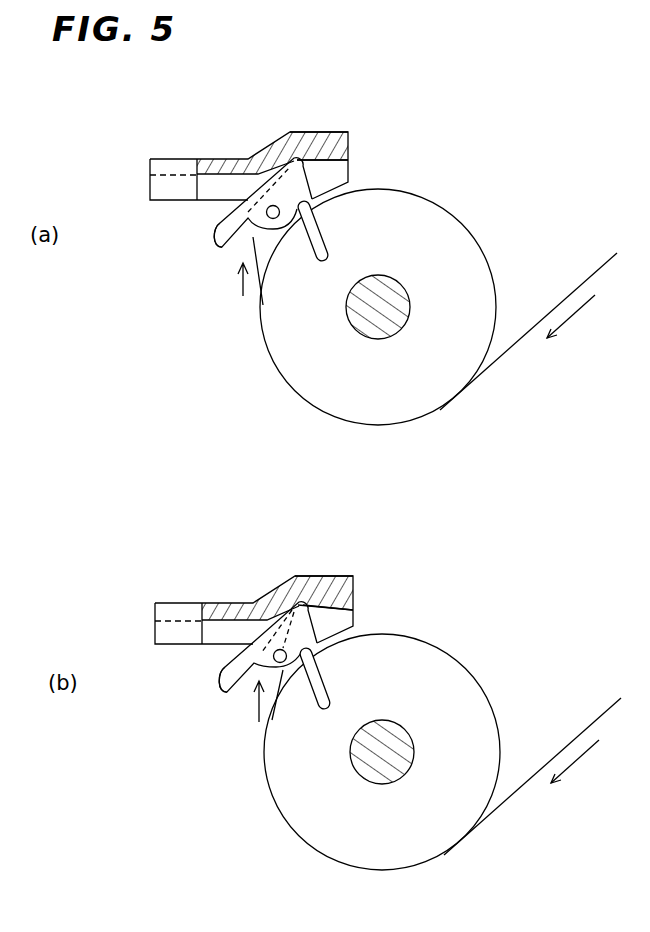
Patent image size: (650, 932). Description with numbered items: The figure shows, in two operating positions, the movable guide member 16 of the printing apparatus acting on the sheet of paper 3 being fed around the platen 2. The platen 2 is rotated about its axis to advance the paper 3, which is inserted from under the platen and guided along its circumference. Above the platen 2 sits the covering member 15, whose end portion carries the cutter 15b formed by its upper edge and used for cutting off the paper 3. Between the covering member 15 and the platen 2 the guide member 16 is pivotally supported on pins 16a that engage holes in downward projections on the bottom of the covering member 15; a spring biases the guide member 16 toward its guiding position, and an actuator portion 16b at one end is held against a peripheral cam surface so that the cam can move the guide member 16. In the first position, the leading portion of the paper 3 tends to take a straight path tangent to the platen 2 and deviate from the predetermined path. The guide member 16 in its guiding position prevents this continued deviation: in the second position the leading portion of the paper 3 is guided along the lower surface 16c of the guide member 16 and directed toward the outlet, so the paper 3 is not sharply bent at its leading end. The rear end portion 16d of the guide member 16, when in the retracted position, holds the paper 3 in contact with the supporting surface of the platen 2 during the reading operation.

The platen 2 is at (465, 237).
The sheet of paper 3 is at (560, 305).
The covering member 15 is at (238, 158).
The cutter 15b is at (330, 132).
The movable guide member 16 is at (220, 217).
The pin 16a is at (275, 219).
The actuator portion 16b is at (323, 245).
The lower surface 16c is at (230, 244).
The rear end portion 16d is at (348, 162).